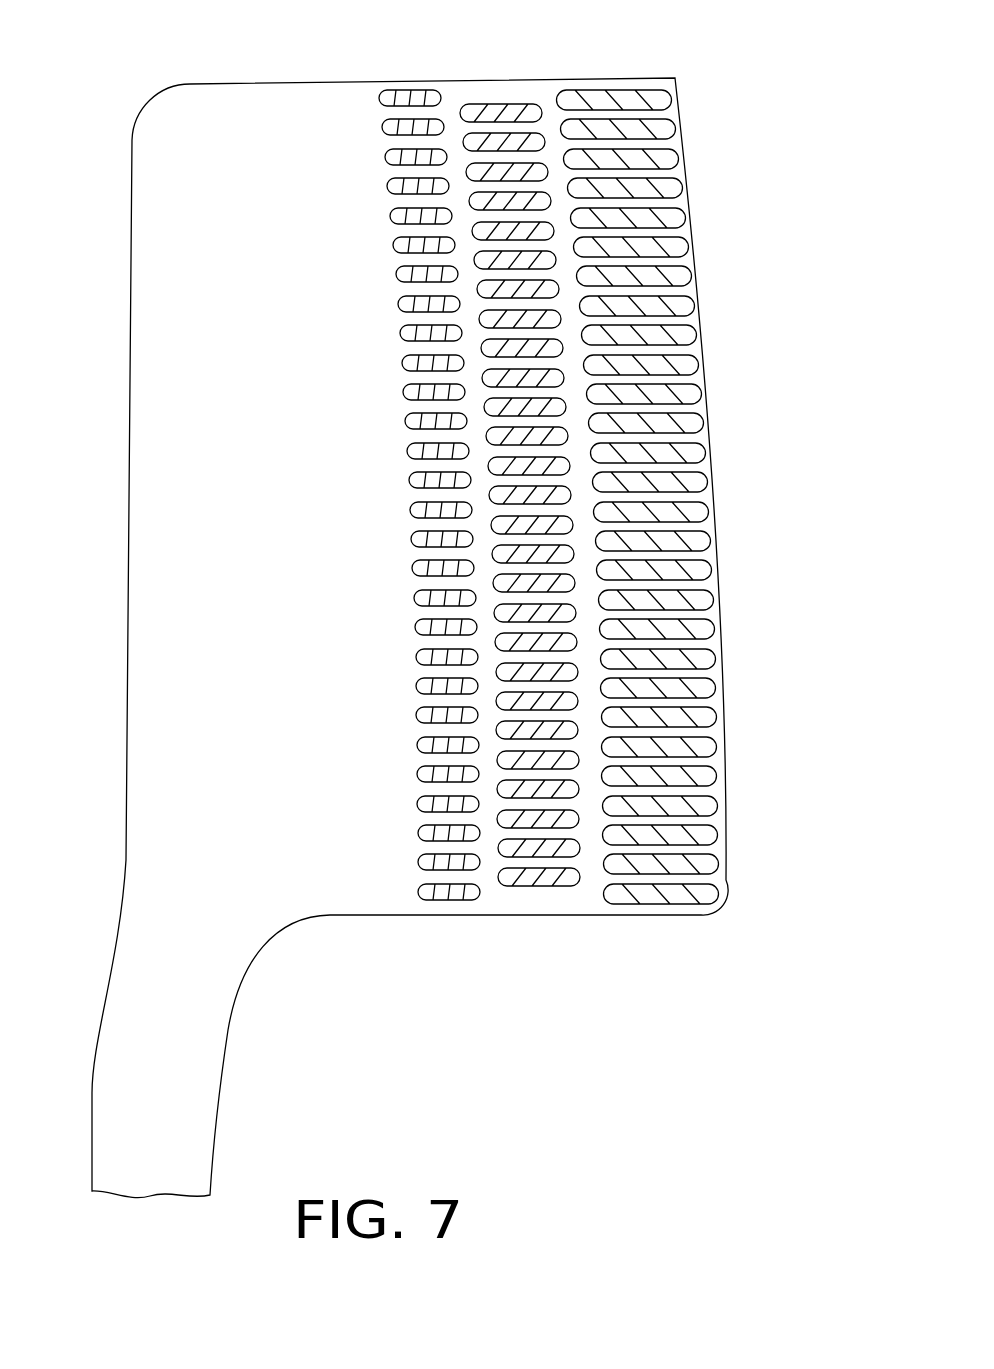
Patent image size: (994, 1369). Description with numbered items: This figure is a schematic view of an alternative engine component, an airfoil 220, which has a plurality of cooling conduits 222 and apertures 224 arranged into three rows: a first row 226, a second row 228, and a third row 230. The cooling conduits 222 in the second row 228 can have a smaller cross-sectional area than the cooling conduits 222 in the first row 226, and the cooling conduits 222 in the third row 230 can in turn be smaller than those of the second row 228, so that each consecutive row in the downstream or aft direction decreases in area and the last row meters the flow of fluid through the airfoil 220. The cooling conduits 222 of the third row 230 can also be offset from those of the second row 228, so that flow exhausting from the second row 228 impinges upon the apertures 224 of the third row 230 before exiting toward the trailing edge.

The airfoil 220 is at (212, 83).
The cooling conduits 222 is at (770, 675).
The apertures 224 is at (578, 98).
The first row 226 is at (451, 903).
The second row 228 is at (538, 903).
The third row 230 is at (659, 903).